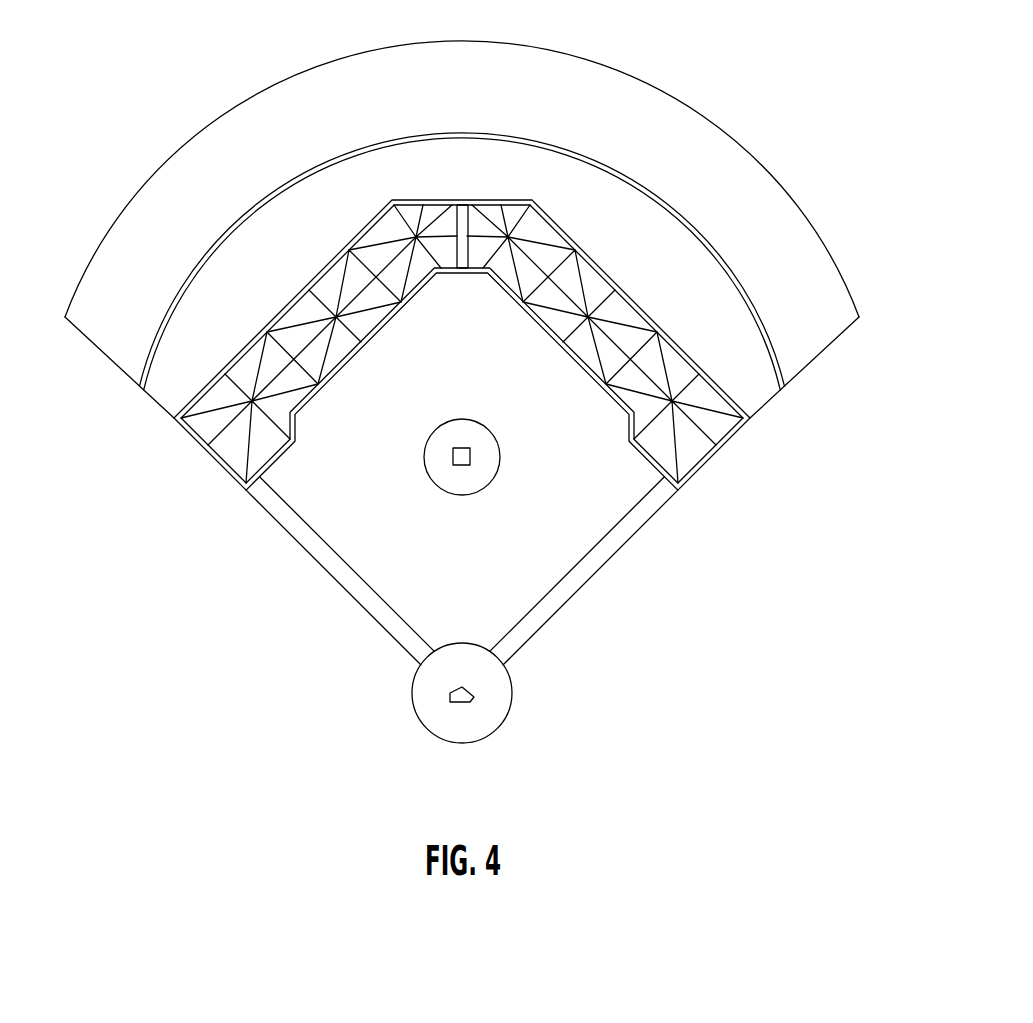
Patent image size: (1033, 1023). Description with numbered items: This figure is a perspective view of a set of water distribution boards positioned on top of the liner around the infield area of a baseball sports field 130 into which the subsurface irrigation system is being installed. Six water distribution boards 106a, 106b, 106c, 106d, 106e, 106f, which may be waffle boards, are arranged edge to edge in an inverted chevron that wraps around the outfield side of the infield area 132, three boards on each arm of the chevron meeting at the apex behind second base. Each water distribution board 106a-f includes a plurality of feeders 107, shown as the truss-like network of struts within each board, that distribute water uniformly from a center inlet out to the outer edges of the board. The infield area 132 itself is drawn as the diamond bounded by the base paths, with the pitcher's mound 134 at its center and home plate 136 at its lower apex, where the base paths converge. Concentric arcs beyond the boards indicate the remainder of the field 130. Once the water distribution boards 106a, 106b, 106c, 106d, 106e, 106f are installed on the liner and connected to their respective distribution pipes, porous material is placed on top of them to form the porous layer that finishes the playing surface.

The baseball sports field 130 is at (737, 77).
The water distribution board 106a is at (713, 423).
The water distribution board 106b is at (595, 288).
The water distribution board 106c is at (536, 208).
The water distribution board 106d is at (412, 217).
The water distribution board 106e is at (335, 307).
The water distribution board 106f is at (248, 387).
The feeder 107 is at (668, 370).
The infield area 132 is at (480, 584).
The pitcher's mound 134 is at (470, 458).
The home plate 136 is at (473, 700).